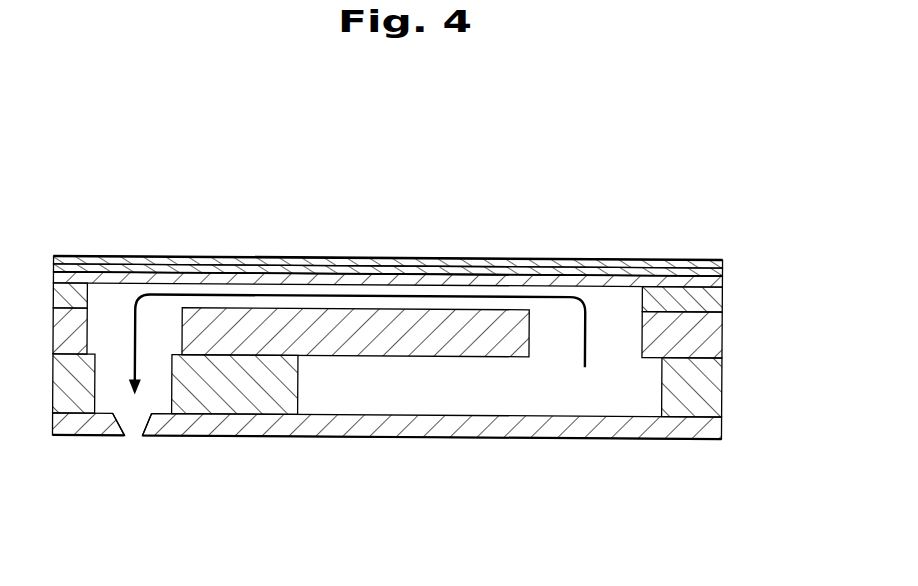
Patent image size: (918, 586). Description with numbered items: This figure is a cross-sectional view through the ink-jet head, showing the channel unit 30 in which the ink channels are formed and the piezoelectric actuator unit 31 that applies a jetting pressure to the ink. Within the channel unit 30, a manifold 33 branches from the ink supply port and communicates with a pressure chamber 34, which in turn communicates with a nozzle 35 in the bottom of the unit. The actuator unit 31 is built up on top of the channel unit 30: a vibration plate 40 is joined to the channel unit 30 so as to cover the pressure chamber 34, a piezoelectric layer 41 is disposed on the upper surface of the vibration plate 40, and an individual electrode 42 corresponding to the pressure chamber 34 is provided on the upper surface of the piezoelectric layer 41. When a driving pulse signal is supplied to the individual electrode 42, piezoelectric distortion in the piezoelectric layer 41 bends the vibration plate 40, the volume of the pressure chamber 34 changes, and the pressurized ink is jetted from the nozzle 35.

The channel unit 30 is at (751, 343).
The actuator unit 31 is at (433, 208).
The manifold 33 is at (453, 413).
The pressure chamber 34 is at (498, 291).
The nozzle 35 is at (121, 426).
The vibration plate 40 is at (707, 283).
The piezoelectric layer 41 is at (706, 269).
The individual electrode 42 is at (294, 257).